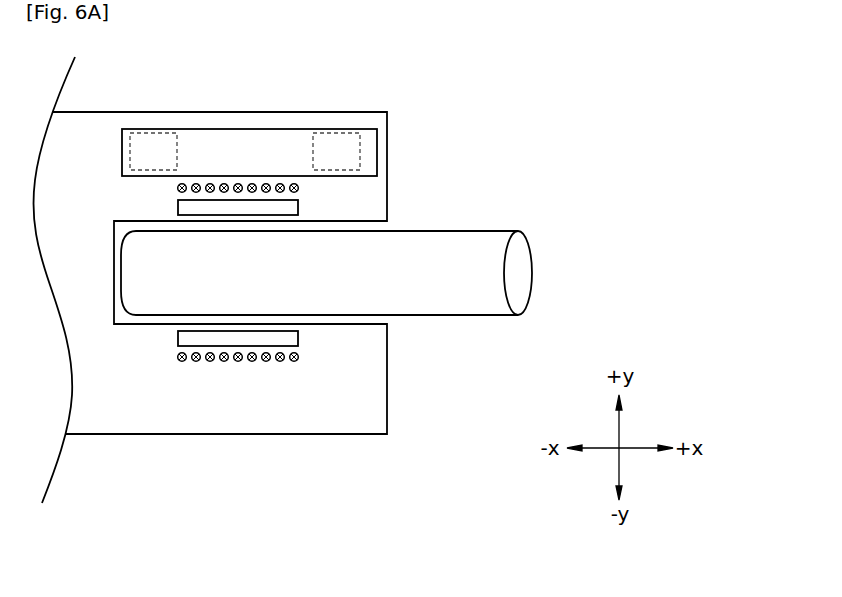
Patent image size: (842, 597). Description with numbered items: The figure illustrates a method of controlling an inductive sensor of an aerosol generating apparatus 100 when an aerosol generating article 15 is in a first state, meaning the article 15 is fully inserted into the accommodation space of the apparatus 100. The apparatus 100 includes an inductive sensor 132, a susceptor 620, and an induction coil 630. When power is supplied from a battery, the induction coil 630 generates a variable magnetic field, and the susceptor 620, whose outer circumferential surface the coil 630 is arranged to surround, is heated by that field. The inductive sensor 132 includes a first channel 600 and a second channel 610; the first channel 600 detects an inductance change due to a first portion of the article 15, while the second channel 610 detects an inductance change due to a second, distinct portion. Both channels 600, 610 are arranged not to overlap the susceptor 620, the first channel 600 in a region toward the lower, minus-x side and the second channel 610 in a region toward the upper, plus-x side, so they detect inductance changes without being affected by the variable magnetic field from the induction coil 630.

The aerosol generating apparatus 100 is at (387, 379).
The inductive sensor 132 is at (252, 128).
The first channel 600 is at (155, 132).
The second channel 610 is at (338, 132).
The aerosol generating article 15 is at (523, 258).
The susceptor 620 is at (202, 341).
The induction coil 630 is at (277, 362).